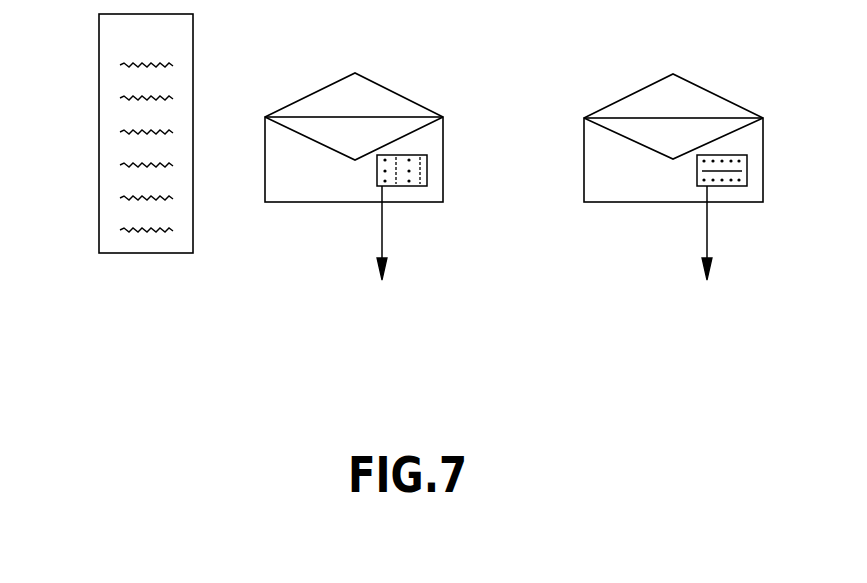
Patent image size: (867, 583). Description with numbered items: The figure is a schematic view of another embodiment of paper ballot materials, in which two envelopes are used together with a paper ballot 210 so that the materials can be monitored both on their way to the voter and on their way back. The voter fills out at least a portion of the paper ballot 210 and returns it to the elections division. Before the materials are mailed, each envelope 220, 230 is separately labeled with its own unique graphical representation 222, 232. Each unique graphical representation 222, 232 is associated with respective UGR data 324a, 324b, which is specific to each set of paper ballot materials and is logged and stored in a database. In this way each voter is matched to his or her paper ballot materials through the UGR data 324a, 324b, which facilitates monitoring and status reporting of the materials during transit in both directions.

The paper ballot 210 is at (115, 144).
The envelope 220 is at (393, 92).
The unique graphical representation 222 is at (406, 186).
The envelope 230 is at (712, 93).
The unique graphical representation 232 is at (726, 186).
The UGR data 324a is at (354, 267).
The UGR data 324b is at (674, 267).